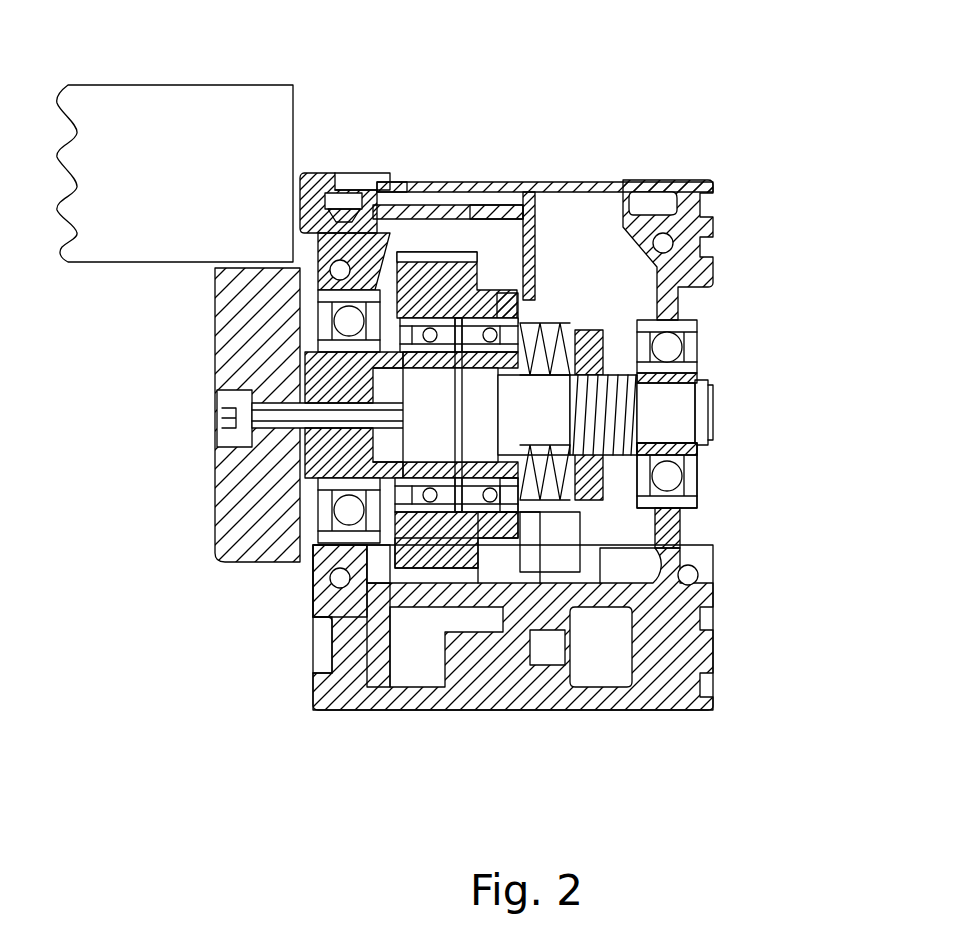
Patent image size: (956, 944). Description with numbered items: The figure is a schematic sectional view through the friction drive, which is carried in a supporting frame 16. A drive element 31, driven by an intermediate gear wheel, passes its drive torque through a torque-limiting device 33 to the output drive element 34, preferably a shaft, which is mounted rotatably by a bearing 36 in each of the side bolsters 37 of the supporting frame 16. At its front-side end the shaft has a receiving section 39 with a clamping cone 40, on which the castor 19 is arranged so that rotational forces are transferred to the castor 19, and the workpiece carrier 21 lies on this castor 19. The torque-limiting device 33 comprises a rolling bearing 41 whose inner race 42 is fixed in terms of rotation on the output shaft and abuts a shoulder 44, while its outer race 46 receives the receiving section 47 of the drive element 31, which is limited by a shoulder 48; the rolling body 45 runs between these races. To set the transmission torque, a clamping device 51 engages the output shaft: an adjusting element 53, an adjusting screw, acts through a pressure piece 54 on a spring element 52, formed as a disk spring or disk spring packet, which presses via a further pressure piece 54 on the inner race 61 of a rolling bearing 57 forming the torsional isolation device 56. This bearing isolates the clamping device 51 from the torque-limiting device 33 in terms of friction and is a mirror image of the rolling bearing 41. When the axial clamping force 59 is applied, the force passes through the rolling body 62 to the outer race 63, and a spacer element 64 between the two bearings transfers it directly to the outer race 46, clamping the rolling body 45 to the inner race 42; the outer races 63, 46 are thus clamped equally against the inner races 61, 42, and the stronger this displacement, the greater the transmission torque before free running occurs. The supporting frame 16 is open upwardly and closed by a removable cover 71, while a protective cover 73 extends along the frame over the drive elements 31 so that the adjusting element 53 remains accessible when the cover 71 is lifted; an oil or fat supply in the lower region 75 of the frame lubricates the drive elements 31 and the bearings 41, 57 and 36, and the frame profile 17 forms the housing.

The supporting frame 16 is at (325, 752).
The housing profile 17 is at (313, 692).
The castor 19 is at (235, 548).
The workpiece carrier 21 is at (157, 98).
The drive element 31 is at (482, 182).
The torque-limiting device 33 is at (570, 610).
The drive element (output element) 34 is at (718, 413).
The bearing 36 is at (320, 302).
The side bolster 37 is at (685, 527).
The receiving section 39 is at (300, 455).
The clamping cone 40 is at (295, 472).
The rolling bearing 41 is at (415, 300).
The inner race 42 is at (360, 600).
The shoulder 44 is at (330, 185).
The rolling body 45 is at (385, 570).
The outer race 46 is at (432, 560).
The receiving section 47 is at (455, 290).
The shoulder 48 is at (344, 209).
The clamping device 51 is at (660, 302).
The spring element 52 is at (552, 325).
The adjusting element 53 is at (680, 347).
The pressure piece 54 is at (512, 325).
The torsional isolation device 56 is at (529, 270).
The rolling bearing 57 is at (507, 205).
The axial clamping force 59 is at (575, 522).
The inner race 61 is at (520, 555).
The rolling body 62 is at (510, 515).
The outer race 63 is at (500, 540).
The spacer element 64 is at (460, 520).
The removable cover 71 is at (392, 182).
The protective cover 73 is at (432, 205).
The lower region 75 is at (538, 540).